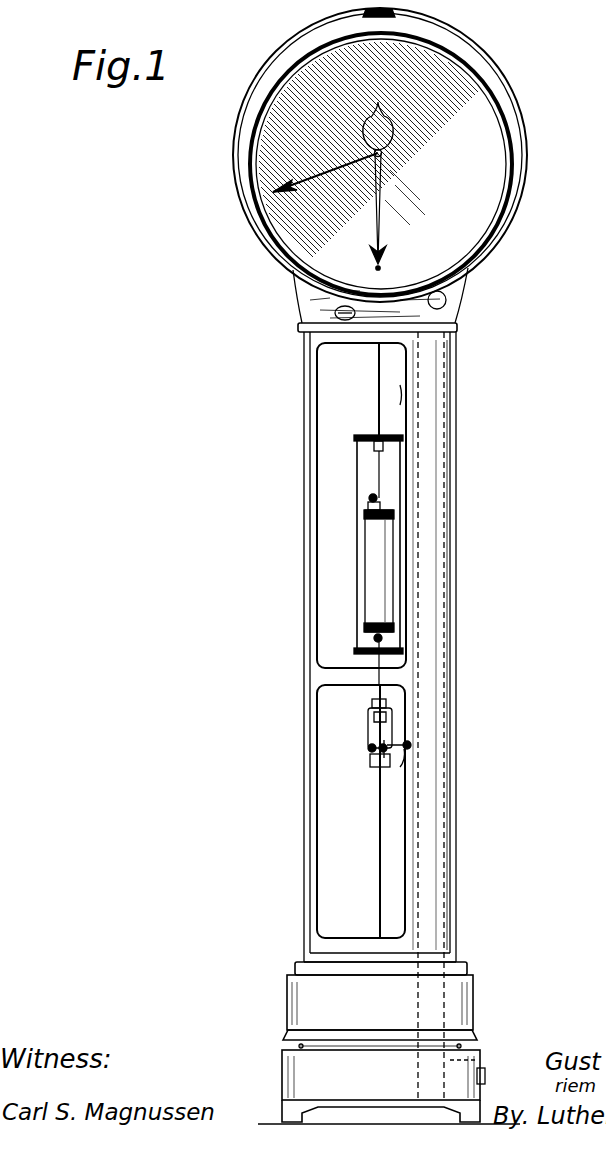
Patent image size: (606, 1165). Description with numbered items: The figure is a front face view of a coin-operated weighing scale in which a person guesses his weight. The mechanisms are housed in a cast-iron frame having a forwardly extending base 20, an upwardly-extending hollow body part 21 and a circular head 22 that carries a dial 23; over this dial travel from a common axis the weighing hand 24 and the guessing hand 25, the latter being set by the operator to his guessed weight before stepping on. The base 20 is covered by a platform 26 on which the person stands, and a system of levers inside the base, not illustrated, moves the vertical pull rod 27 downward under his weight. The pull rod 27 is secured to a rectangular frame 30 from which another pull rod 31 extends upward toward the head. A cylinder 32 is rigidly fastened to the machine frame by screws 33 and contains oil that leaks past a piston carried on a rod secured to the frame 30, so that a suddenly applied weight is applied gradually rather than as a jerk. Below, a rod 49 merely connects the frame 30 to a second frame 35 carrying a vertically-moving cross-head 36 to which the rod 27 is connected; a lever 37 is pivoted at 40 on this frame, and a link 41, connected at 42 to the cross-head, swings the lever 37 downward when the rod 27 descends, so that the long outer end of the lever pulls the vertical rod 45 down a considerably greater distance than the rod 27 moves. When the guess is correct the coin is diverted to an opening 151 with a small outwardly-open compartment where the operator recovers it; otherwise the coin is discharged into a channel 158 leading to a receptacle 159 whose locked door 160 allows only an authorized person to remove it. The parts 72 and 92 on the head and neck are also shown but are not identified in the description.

The base 20 is at (282, 1078).
The hollow body part 21 is at (435, 812).
The circular head 22 is at (516, 104).
The dial 23 is at (358, 145).
The weighing hand 24 is at (382, 197).
The guessing hand 25 is at (345, 176).
The platform 26 is at (474, 1008).
The pull rod 27 is at (379, 886).
The rectangular frame 30 is at (356, 452).
The pull rod 31 is at (378, 381).
The cylinder 32 is at (375, 573).
The screws 33 is at (368, 499).
The frame 35 is at (372, 718).
The cross-head 36 is at (372, 727).
The lever 37 is at (406, 767).
The pivot 40 is at (372, 750).
The link 41 is at (392, 738).
The link connection 42 is at (392, 710).
The vertical rod 45 is at (402, 392).
The rod 49 is at (372, 694).
The knob 72 is at (447, 302).
The top knob 92 is at (395, 12).
The opening 151 is at (335, 312).
The channel 158 is at (446, 552).
The receptacle 159 is at (478, 1060).
The locked door 160 is at (480, 1068).